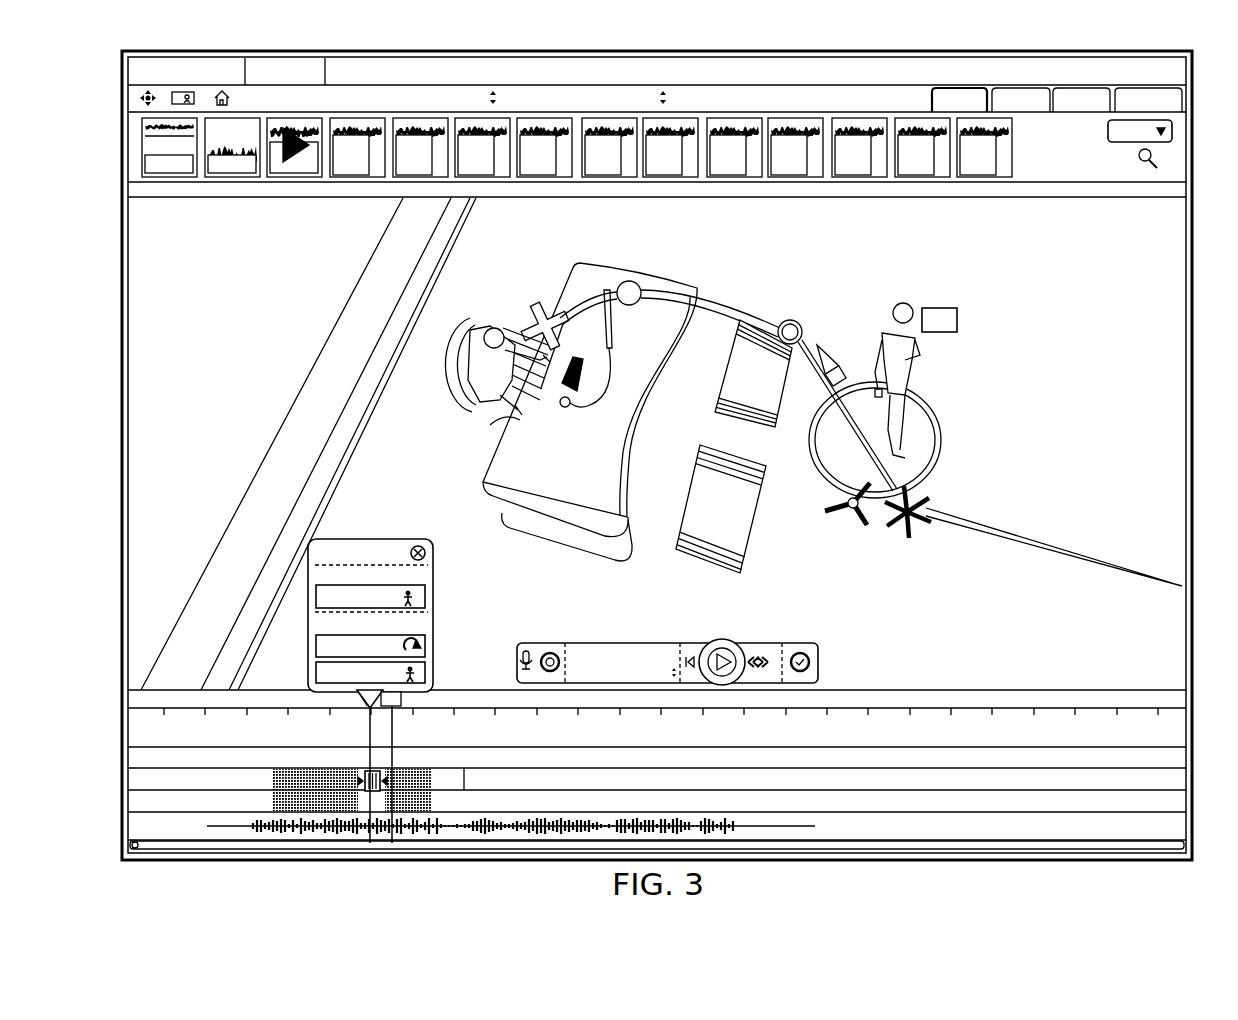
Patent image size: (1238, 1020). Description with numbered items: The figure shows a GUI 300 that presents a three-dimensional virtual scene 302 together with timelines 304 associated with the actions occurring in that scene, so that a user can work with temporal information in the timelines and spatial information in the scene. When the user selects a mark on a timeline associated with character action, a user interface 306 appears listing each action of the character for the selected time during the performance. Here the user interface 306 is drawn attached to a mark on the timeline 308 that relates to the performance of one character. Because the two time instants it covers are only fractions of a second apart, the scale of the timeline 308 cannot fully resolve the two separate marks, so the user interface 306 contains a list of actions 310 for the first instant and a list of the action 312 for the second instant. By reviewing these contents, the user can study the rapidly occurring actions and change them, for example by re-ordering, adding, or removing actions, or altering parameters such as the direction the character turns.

The GUI 300 is at (1192, 252).
The three-dimensional virtual scene 302 is at (1033, 275).
The timelines 304 is at (629, 769).
The user interface 306 is at (412, 608).
The timeline 308 is at (132, 779).
The list of actions 310 is at (435, 598).
The list of the action 312 is at (436, 650).